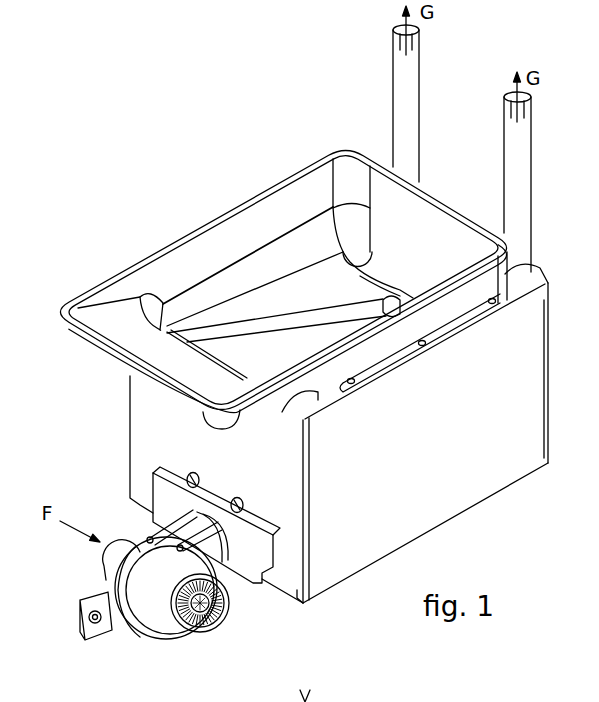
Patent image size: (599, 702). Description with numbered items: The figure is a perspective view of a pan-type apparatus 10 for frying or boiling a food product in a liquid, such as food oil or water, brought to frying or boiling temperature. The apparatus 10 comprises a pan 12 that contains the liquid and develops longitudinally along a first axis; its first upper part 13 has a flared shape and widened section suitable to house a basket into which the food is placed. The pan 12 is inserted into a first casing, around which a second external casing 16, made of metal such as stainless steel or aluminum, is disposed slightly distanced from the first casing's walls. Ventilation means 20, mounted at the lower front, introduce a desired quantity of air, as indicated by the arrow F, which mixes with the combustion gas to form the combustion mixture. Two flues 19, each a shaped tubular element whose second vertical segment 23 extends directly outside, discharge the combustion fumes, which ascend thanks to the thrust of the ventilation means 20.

The pan-type apparatus 10 is at (128, 226).
The pan 12 is at (172, 236).
The first upper part 13 is at (256, 217).
The second external casing 16 is at (518, 462).
The flues 19 is at (386, 99).
The ventilation means 20 is at (172, 652).
The second vertical segment 23 is at (406, 147).